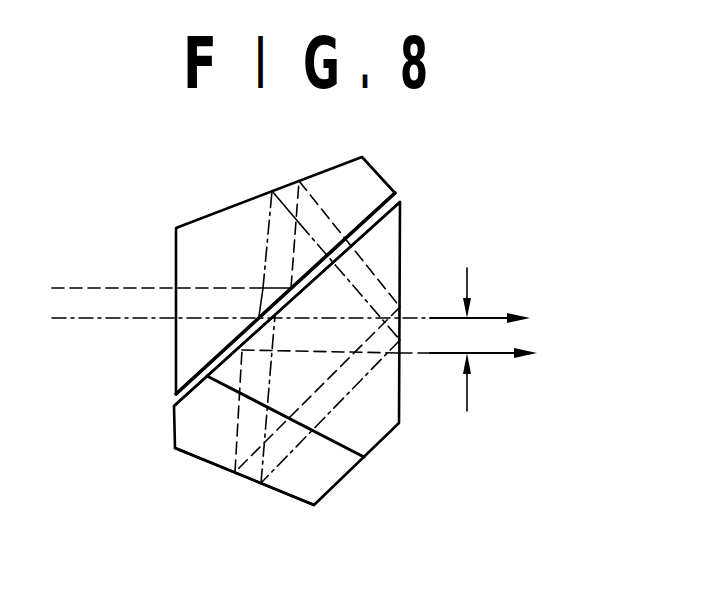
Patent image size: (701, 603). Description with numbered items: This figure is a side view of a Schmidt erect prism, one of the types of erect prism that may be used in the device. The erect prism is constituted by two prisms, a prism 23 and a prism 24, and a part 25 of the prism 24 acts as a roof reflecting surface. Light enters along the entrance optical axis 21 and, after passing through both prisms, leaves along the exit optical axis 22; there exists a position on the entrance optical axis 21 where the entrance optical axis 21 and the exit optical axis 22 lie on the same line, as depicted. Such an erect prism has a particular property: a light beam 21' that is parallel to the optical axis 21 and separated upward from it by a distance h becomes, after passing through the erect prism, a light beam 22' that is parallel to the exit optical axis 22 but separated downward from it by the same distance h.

The entrance optical axis 21 is at (241, 337).
The light beam 21' is at (226, 326).
The exit optical axis 22 is at (487, 291).
The light beam 22' is at (471, 380).
The prism 23 is at (337, 183).
The prism 24 is at (399, 410).
The roof reflecting surface 25 is at (226, 484).
The separation distance h is at (468, 339).